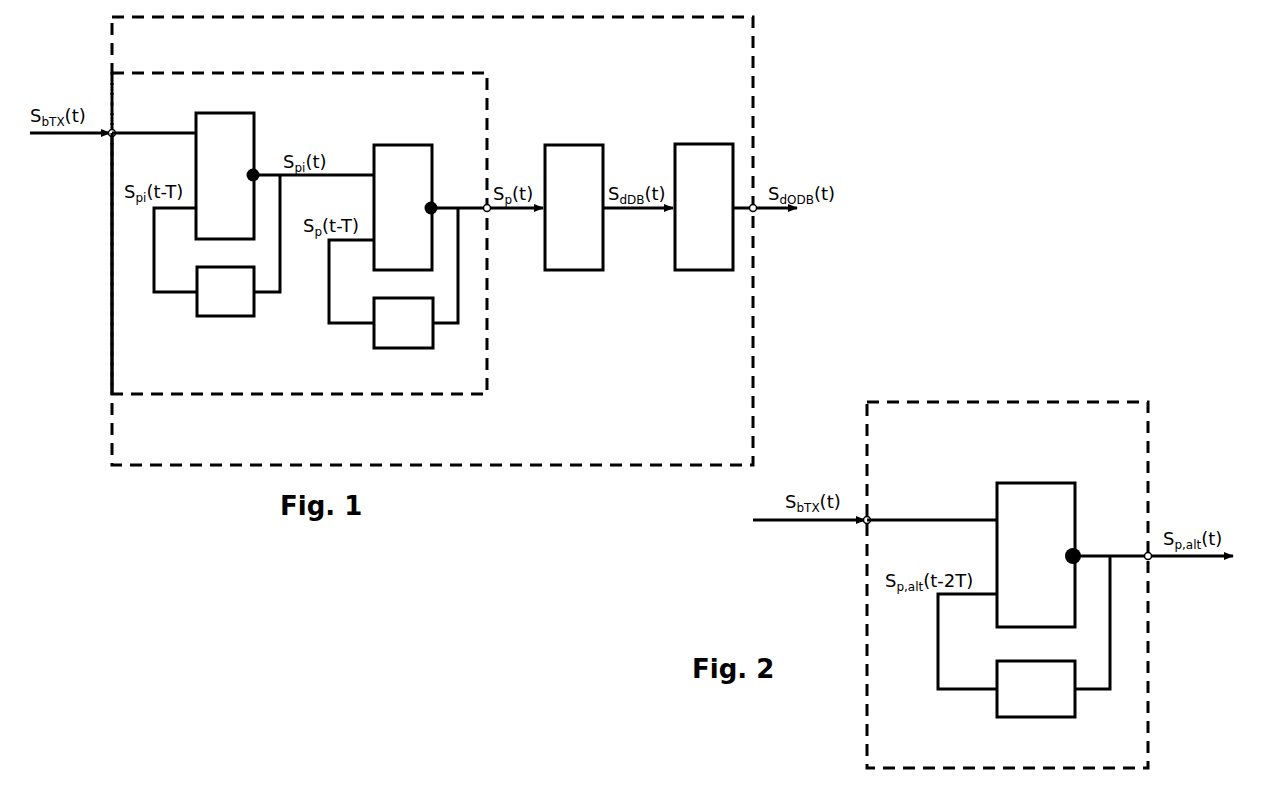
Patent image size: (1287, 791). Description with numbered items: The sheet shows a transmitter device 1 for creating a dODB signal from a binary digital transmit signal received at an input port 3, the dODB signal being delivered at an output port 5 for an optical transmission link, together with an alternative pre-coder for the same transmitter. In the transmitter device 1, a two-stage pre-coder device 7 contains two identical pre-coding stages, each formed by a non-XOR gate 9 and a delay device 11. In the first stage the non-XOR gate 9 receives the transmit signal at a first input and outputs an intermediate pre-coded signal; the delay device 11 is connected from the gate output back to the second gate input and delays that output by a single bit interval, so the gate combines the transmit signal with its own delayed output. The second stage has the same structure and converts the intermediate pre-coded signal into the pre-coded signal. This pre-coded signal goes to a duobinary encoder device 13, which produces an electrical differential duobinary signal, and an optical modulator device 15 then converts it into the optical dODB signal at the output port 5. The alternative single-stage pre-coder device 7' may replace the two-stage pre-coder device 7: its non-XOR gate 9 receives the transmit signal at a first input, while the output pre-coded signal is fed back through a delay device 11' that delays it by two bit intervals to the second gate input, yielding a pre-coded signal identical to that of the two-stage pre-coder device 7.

In FIG. 1, the transmitter device 1 is at (755, 75).
In FIG. 1, the input port 3 is at (110, 137).
In FIG. 1, the output port 5 is at (757, 212).
In FIG. 1, the pre-coder device 7 is at (322, 220).
In FIG. 1, the non-XOR gate 9 is at (250, 127).
In FIG. 2, the non-XOR gate 9 is at (1025, 488).
In FIG. 1, the delay device 11 is at (306, 284).
In FIG. 1, the duobinary encoder device 13 is at (573, 150).
In FIG. 1, the optical modulator device 15 is at (690, 152).
In FIG. 2, the single stage pre-coder device 7' is at (1034, 585).
In FIG. 2, the delay device 11' is at (1024, 657).